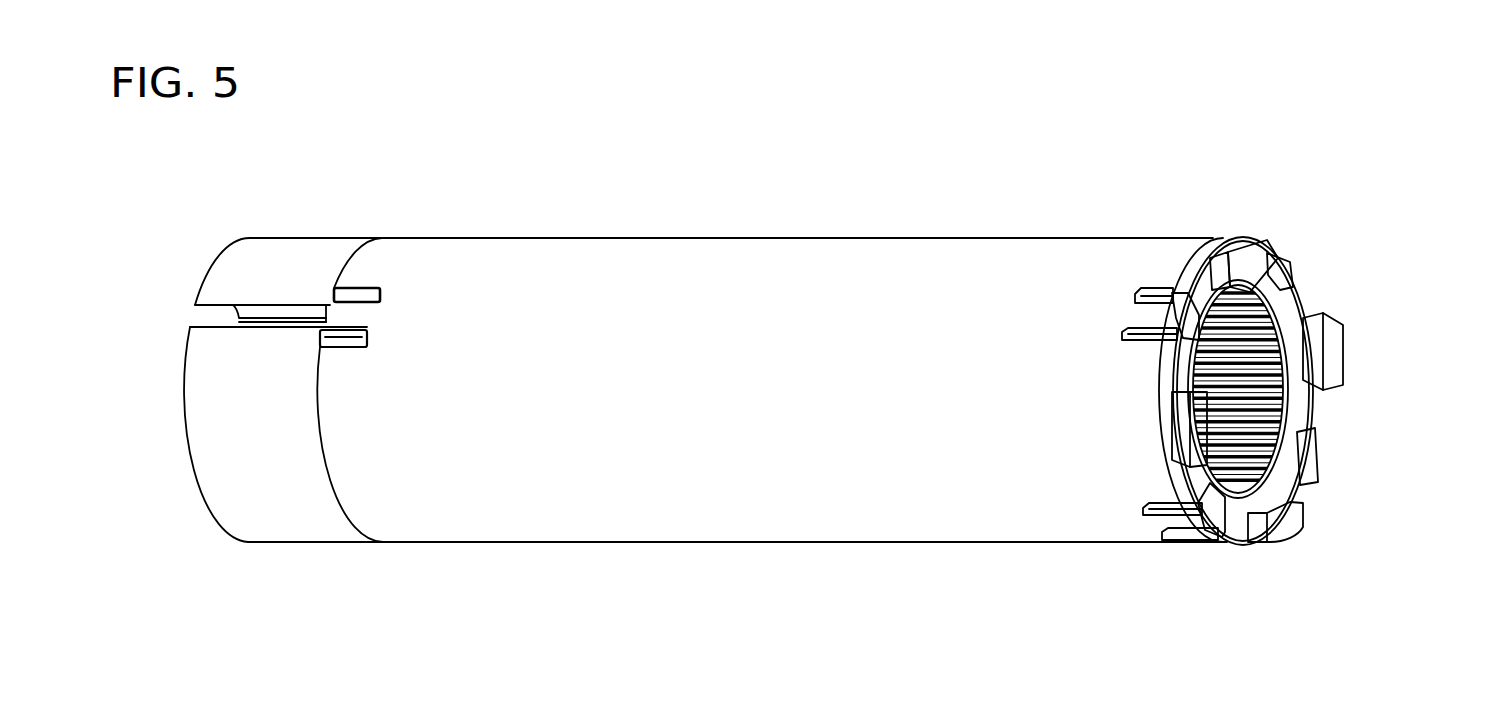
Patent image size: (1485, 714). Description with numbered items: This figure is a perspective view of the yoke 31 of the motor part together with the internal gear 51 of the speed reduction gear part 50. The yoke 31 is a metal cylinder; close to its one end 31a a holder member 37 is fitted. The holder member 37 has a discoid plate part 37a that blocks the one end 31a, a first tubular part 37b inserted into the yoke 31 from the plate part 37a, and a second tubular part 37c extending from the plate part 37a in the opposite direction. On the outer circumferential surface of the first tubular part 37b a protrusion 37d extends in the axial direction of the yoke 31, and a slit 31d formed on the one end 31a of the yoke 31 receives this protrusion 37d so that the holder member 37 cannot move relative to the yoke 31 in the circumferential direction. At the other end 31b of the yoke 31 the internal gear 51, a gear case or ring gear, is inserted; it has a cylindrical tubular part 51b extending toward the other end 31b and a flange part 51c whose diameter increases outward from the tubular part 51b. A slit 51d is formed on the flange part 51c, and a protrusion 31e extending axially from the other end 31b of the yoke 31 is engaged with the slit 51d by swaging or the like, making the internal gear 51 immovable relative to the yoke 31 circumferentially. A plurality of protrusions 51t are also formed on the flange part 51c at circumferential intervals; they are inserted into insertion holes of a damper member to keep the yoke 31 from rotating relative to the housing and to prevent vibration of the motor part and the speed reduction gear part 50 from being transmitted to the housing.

The yoke 31 is at (788, 248).
The one end of the yoke 31a is at (400, 535).
The other end of the yoke 31b is at (1193, 245).
The slit 31d is at (330, 313).
The protrusion 31e is at (1160, 298).
The holder member 37 is at (375, 242).
The plate part 37a is at (357, 262).
The first tubular part 37b is at (360, 337).
The second tubular part 37c is at (265, 248).
The protrusion 37d is at (437, 317).
The speed reduction gear part 50 is at (1310, 297).
The internal gear 51 is at (1261, 371).
The tubular part 51b is at (1253, 388).
The flange part 51c is at (1217, 242).
The slit 51d is at (1188, 332).
The protrusions 51t is at (1260, 253).